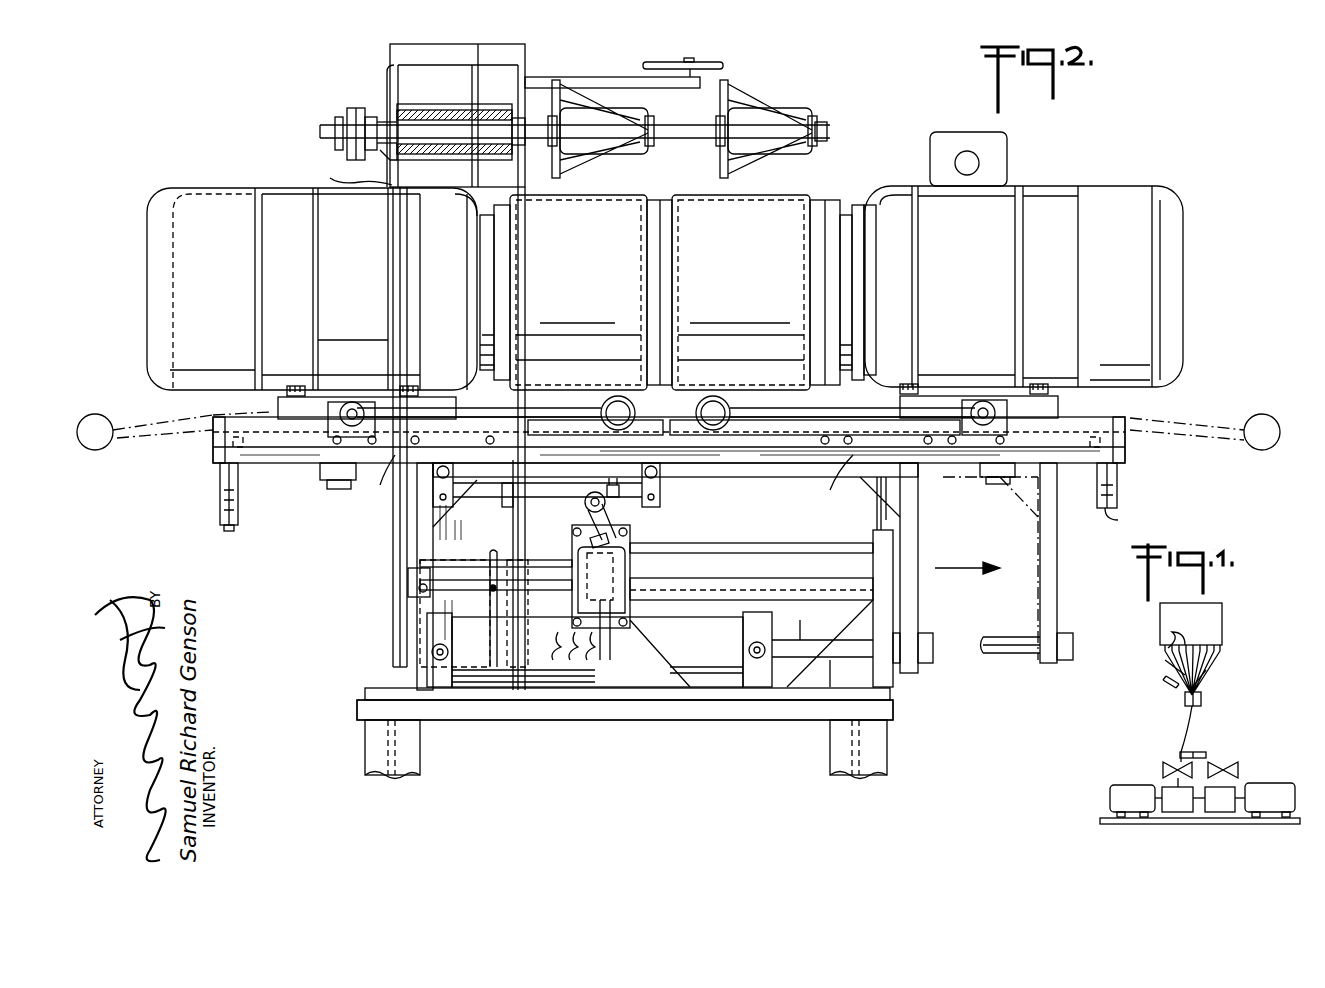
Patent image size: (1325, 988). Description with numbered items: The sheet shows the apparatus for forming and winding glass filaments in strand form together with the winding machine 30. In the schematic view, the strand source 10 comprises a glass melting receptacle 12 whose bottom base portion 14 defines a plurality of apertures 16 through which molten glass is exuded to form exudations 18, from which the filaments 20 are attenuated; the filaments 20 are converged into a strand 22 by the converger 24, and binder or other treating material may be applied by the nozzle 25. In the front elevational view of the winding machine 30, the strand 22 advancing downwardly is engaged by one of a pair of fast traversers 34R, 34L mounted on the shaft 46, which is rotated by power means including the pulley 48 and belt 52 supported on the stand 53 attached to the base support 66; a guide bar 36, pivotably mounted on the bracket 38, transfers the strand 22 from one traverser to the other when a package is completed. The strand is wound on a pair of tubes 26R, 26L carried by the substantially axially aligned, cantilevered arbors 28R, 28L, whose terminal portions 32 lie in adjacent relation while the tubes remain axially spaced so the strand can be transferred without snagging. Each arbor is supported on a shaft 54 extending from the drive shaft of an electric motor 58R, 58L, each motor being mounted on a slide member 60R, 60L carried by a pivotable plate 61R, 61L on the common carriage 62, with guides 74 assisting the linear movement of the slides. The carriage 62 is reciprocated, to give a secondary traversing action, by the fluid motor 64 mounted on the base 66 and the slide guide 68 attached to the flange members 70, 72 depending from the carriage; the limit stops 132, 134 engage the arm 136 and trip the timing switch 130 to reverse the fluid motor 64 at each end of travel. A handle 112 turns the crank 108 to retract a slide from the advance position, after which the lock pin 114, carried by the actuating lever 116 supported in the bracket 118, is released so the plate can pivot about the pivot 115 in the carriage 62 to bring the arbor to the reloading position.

In FIG. 1, the strand source 10 is at (1153, 658).
In FIG. 1, the glass melting receptacle 12 is at (1222, 628).
In FIG. 1, the bottom base portion 14 is at (1222, 650).
In FIG. 1, the apertures 16 is at (1185, 638).
In FIG. 1, the exudations 18 is at (1165, 662).
In FIG. 1, the filaments 20 is at (1215, 672).
In FIG. 1, the strand 22 is at (1195, 735).
In FIG. 1, the converger 24 is at (1203, 700).
In FIG. 1, the nozzle 25 is at (1170, 690).
In FIG. 2, the left tube 26L is at (567, 195).
In FIG. 2, the right tube 26R is at (725, 195).
In FIG. 2, the left spindle or arbor 28L is at (660, 200).
In FIG. 1, the left spindle or arbor 28L is at (1180, 805).
In FIG. 2, the right spindle or arbor 28R is at (830, 200).
In FIG. 1, the right spindle or arbor 28R is at (1222, 805).
In FIG. 2, the winding machine 30 is at (345, 716).
In FIG. 1, the winding machine 30 is at (1090, 828).
In FIG. 2, the terminal portions 32 is at (700, 402).
In FIG. 2, the left fast traverser 34L is at (618, 104).
In FIG. 1, the left fast traverser 34L is at (1166, 766).
In FIG. 2, the right fast traverser 34R is at (775, 108).
In FIG. 1, the right fast traverser 34R is at (1238, 768).
In FIG. 2, the guide bar 36 is at (710, 60).
In FIG. 1, the guide bar 36 is at (1206, 752).
In FIG. 2, the bracket 38 is at (565, 77).
In FIG. 2, the shaft 46 is at (390, 80).
In FIG. 2, the pulley 48 is at (335, 118).
In FIG. 2, the belt 52 is at (352, 108).
In FIG. 2, the stand 53 is at (527, 55).
In FIG. 2, the shaft 54 is at (495, 296).
In FIG. 2, the left electric motor 58L is at (278, 188).
In FIG. 1, the left electric motor 58L is at (1138, 800).
In FIG. 2, the right electric motor 58R is at (1042, 188).
In FIG. 1, the right electric motor 58R is at (1278, 800).
In FIG. 2, the left slide member 60L is at (568, 420).
In FIG. 2, the right slide member 60R is at (775, 420).
In FIG. 2, the left pivotable plate 61L is at (213, 447).
In FIG. 2, the right pivotable plate 61R is at (1130, 445).
In FIG. 2, the carriage 62 is at (290, 465).
In FIG. 2, the fluid motor 64 is at (712, 657).
In FIG. 2, the base support 66 is at (645, 718).
In FIG. 2, the slide guide 68 is at (740, 543).
In FIG. 2, the flange member 70 is at (415, 513).
In FIG. 2, the flange member 72 is at (918, 520).
In FIG. 2, the guide 74 is at (639, 483).
In FIG. 2, the crank 108 is at (152, 420).
In FIG. 2, the handle 112 is at (350, 398).
In FIG. 2, the lock pin 114 is at (248, 414).
In FIG. 2, the pivot 115 is at (335, 490).
In FIG. 2, the actuating lever 116 is at (228, 520).
In FIG. 2, the bracket 118 is at (220, 510).
In FIG. 2, the timing switch 130 is at (628, 575).
In FIG. 2, the limit stop 132 is at (500, 497).
In FIG. 2, the limit stop 134 is at (642, 500).
In FIG. 2, the arm 136 is at (585, 506).